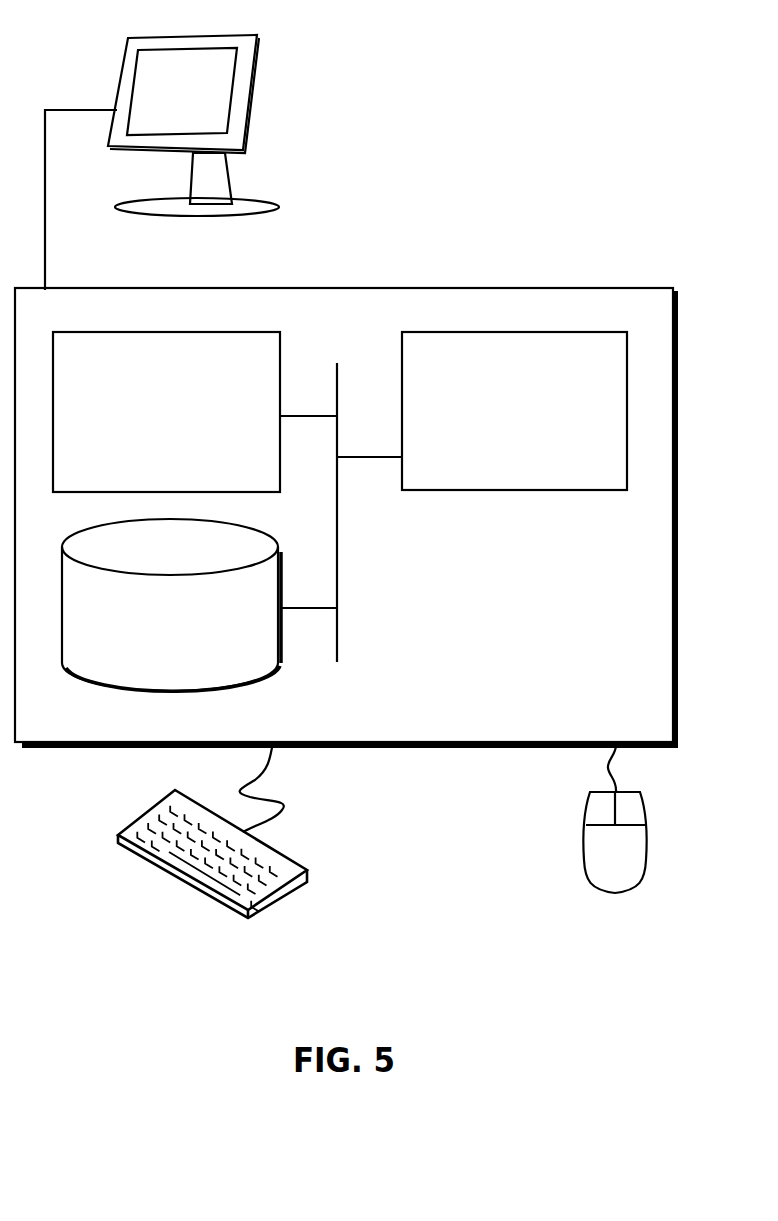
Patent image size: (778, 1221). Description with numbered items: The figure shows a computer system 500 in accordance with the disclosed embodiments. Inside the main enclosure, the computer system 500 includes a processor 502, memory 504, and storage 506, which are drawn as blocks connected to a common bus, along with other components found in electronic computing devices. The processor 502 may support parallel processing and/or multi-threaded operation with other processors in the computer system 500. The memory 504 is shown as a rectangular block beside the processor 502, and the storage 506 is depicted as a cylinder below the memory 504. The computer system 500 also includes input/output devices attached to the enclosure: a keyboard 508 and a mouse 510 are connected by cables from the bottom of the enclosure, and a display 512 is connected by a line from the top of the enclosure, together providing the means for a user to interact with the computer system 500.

The computer system 500 is at (392, 267).
The processor 502 is at (538, 422).
The memory 504 is at (188, 422).
The storage 506 is at (194, 634).
The keyboard 508 is at (137, 853).
The mouse 510 is at (636, 863).
The display 512 is at (162, 162).